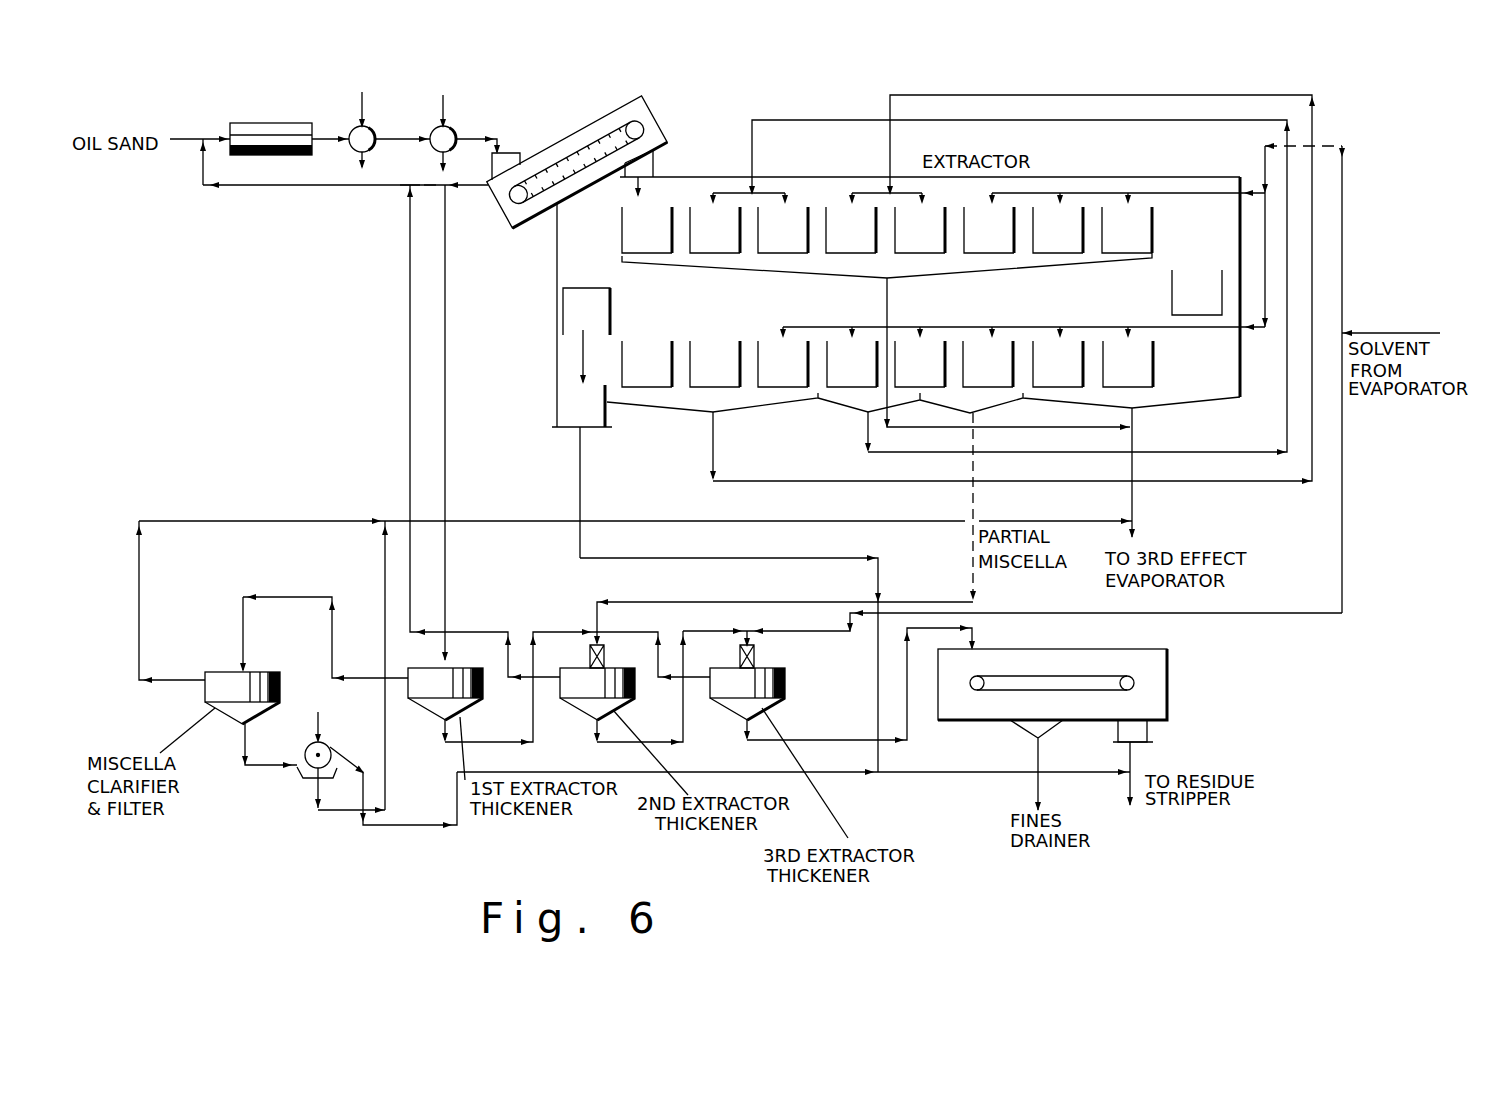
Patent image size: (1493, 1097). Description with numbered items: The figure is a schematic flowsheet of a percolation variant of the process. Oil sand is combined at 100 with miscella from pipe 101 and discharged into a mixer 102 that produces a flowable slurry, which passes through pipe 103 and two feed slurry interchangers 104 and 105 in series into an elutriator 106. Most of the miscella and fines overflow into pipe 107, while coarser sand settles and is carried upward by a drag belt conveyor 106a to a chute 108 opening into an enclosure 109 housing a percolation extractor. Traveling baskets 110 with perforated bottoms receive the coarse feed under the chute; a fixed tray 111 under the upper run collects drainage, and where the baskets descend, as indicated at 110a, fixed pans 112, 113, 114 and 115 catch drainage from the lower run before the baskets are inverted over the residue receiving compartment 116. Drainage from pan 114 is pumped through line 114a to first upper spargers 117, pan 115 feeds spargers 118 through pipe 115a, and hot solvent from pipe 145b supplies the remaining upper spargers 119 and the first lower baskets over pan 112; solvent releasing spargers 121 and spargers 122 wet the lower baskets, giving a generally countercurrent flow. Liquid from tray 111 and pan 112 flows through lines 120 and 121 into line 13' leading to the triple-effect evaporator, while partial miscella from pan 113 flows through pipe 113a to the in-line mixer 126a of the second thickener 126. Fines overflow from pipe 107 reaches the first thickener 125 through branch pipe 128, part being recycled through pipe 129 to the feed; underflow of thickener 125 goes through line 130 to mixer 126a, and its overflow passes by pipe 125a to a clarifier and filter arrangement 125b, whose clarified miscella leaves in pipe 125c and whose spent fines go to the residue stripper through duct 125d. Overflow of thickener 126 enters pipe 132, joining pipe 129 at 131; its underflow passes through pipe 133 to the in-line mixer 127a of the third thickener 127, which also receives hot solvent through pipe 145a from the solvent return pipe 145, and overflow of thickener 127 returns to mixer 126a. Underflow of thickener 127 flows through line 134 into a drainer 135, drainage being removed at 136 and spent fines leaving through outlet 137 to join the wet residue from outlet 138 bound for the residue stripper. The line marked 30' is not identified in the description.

The combining point 100 is at (193, 138).
The miscella pipe 101 is at (276, 187).
The mixer 102 is at (240, 122).
The slurry pipe 103 is at (326, 136).
The feed slurry interchanger 104 is at (370, 128).
The feed slurry interchanger 105 is at (455, 128).
The elutriator 106 is at (607, 125).
The drag belt conveyor 106a is at (630, 107).
The overflow pipe 107 is at (465, 188).
The discharge chute 108 is at (655, 165).
The enclosure 109 is at (713, 177).
The baskets 110 is at (887, 297).
The descending basket 110a is at (1198, 287).
The fixed tray 111 is at (712, 270).
The fixed pan 112 is at (1222, 398).
The fixed pan 113 is at (1000, 405).
The partial miscella pipe 113a is at (907, 598).
The fixed pan 114 is at (843, 408).
The sparger feed line 114a is at (1000, 452).
The fixed pan 115 is at (742, 412).
The sparger feed pipe 115a is at (768, 483).
The residue receiving compartment 116 is at (595, 428).
The first upper spargers 117 is at (765, 190).
The spargers 118 is at (867, 192).
The upper run spargers 119 is at (1082, 190).
The tray drain line 120 is at (889, 289).
The solvent releasing spargers 121 is at (922, 325).
The spargers 122 is at (785, 325).
The first thickener 125 is at (448, 677).
The overflow pipe 125a is at (362, 677).
The clarifier and filter arrangement 125b is at (215, 687).
The clarified miscella pipe 125c is at (139, 603).
The spent fines duct 125d is at (405, 826).
The second thickener 126 is at (602, 678).
The in-line mixer 126a is at (590, 653).
The third thickener 127 is at (787, 682).
The in-line mixer 127a is at (740, 655).
The branch pipe 128 is at (447, 392).
The recycle pipe 129 is at (430, 186).
The underflow line 130 is at (535, 723).
The junction 131 is at (405, 188).
The overflow pipe 132 is at (408, 393).
The underflow pipe 133 is at (687, 723).
The underflow line 134 is at (828, 737).
The drainer 135 is at (962, 722).
The drainage outlet 136 is at (1047, 728).
The spent fines outlet 137 is at (1148, 733).
The residue outlet 138 is at (580, 481).
The evaporator line 13' is at (1175, 504).
The solvent line 30' is at (1012, 634).
The solvent return pipe 145 is at (1378, 333).
The solvent pipe 145a is at (1343, 500).
The solvent pipe 145b is at (1343, 205).